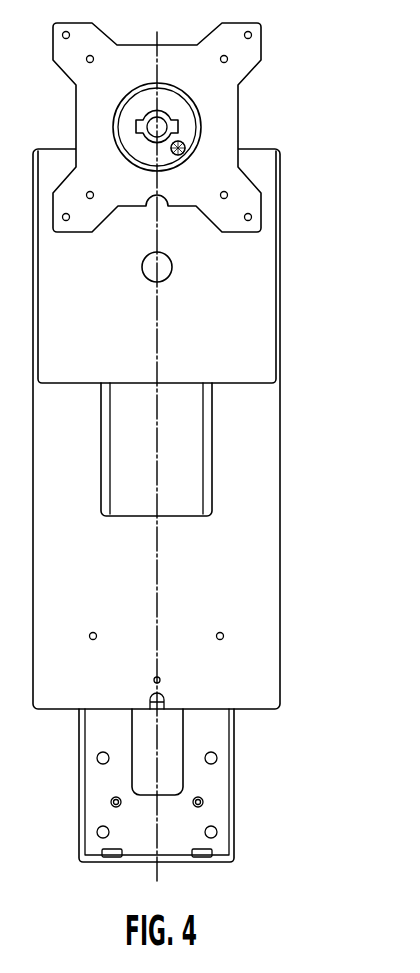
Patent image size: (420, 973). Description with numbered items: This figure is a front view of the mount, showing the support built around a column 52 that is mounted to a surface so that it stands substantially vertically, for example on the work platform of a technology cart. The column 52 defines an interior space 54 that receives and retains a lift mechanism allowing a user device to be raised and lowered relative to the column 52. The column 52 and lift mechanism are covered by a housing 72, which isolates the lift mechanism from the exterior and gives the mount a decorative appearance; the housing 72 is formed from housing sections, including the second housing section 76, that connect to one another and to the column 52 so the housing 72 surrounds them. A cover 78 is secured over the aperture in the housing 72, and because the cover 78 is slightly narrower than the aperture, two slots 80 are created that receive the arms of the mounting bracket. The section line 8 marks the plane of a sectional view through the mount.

The section line 8- 8 is at (157, 32).
The column 52 is at (235, 845).
The interior space 54 is at (229, 777).
The housing 72 is at (290, 405).
The second housing section 76 is at (280, 525).
The cover 78 is at (190, 431).
The slots 80 is at (102, 472).